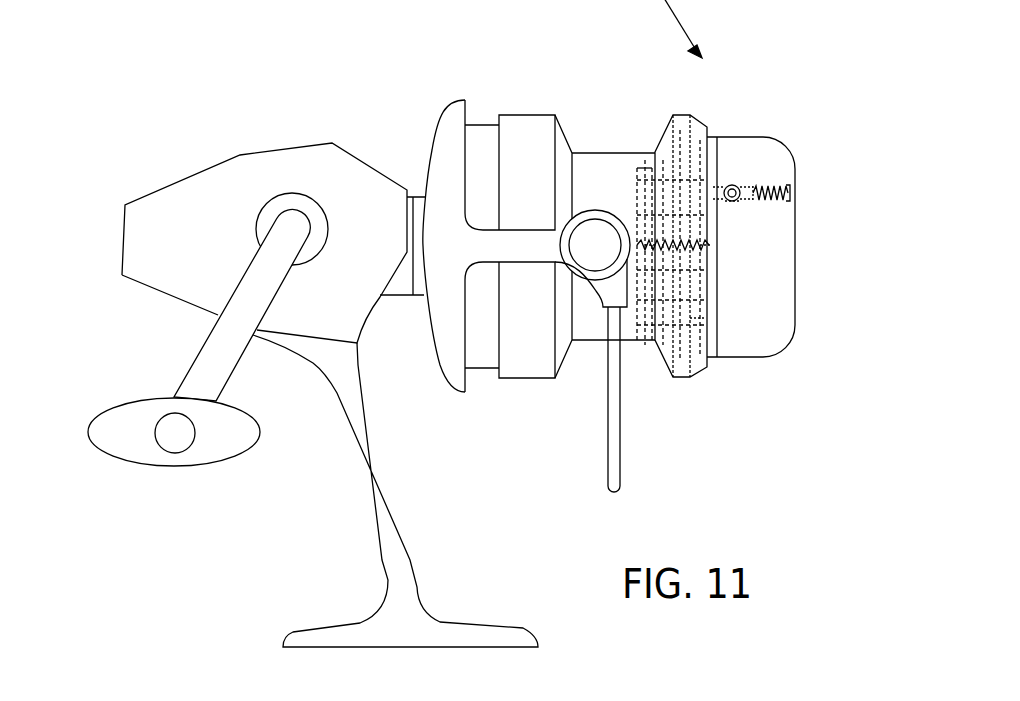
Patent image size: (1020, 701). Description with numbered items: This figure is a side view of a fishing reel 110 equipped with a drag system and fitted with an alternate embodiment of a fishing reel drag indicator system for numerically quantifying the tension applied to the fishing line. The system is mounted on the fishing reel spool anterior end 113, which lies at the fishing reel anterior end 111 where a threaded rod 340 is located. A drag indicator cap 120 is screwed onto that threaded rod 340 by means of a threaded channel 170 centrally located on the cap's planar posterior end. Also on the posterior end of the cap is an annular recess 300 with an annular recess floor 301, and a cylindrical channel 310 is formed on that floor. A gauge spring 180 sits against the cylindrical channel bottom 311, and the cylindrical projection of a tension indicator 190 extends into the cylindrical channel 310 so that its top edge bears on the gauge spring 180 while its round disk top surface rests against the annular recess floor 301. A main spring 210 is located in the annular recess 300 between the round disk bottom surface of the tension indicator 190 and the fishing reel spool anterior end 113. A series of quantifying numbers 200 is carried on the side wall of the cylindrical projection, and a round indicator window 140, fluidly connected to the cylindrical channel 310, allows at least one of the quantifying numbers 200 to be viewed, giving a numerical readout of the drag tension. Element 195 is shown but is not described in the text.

The fishing reel 110 is at (180, 114).
The fishing reel anterior end 111 is at (667, 365).
The fishing reel spool anterior end 113 is at (703, 372).
The drag indicator cap 120 is at (786, 130).
The round indicator window 140 is at (736, 186).
The threaded channel 170 is at (707, 252).
The gauge spring 180 is at (776, 196).
The tension indicator 190 is at (723, 170).
The spool bushing 195 is at (697, 320).
The series of quantifying numbers 200 is at (733, 200).
The main spring 210 is at (650, 287).
The annular recess 300 is at (649, 168).
The annular recess floor 301 is at (640, 173).
The cylindrical channel 310 is at (748, 183).
The cylindrical channel bottom 311 is at (789, 192).
The threaded rod 340 is at (648, 245).